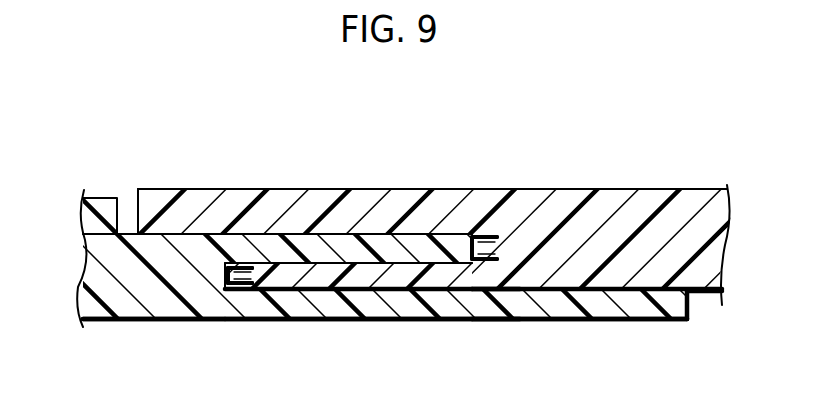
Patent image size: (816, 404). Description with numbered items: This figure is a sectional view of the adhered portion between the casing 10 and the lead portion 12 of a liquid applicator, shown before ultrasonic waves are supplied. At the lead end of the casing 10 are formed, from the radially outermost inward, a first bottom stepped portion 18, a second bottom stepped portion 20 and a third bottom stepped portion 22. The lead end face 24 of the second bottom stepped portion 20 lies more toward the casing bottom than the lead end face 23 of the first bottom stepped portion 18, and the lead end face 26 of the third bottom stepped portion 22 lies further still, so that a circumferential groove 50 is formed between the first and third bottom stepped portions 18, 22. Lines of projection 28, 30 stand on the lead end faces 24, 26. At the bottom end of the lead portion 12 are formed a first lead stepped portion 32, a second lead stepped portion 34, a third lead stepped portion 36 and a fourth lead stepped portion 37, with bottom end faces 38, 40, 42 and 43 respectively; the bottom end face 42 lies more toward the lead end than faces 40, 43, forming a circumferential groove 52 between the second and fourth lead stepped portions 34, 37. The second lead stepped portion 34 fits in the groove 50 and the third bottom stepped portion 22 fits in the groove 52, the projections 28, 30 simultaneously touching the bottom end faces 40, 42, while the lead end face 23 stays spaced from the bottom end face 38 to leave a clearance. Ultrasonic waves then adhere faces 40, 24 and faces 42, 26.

The casing 10 is at (587, 182).
The lead portion 12 is at (173, 330).
The first bottom stepped portion 18 is at (151, 202).
The second bottom stepped portion 20 is at (518, 255).
The third bottom stepped portion 22 is at (320, 282).
The lead end face of the first bottom stepped portion 23 is at (139, 233).
The lead end face of the second bottom stepped portion 24 is at (487, 296).
The lead end face of the third bottom stepped portion 26 is at (240, 287).
The projection 28 is at (243, 270).
The projection 30 is at (492, 236).
The first lead stepped portion 32 is at (102, 196).
The second lead stepped portion 34 is at (373, 240).
The third lead stepped portion 36 is at (150, 318).
The fourth lead stepped portion 37 is at (628, 304).
The bottom end face of the first lead stepped portion 38 is at (119, 238).
The bottom end face of the second lead stepped portion 40 is at (479, 235).
The bottom end face of the third lead stepped portion 42 is at (233, 265).
The bottom end face of the fourth lead stepped portion 43 is at (690, 307).
The groove 50 is at (303, 258).
The groove 52 is at (403, 298).